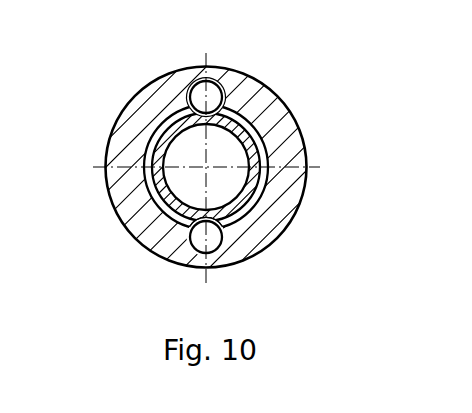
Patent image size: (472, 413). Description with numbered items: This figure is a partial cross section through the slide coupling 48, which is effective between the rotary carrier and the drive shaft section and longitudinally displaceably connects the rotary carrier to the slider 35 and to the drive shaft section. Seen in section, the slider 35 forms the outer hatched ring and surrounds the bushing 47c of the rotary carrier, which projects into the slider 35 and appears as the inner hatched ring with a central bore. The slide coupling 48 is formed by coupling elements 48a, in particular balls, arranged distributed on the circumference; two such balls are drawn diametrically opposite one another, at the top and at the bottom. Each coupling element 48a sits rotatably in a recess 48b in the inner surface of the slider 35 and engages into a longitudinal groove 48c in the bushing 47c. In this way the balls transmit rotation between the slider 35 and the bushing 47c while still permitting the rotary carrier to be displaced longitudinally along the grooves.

The slider 35 is at (110, 139).
The slide coupling 48 is at (265, 82).
The coupling element 48a is at (208, 80).
The recess 48b is at (191, 85).
The longitudinal groove 48c is at (186, 112).
The bushing 47c is at (248, 133).